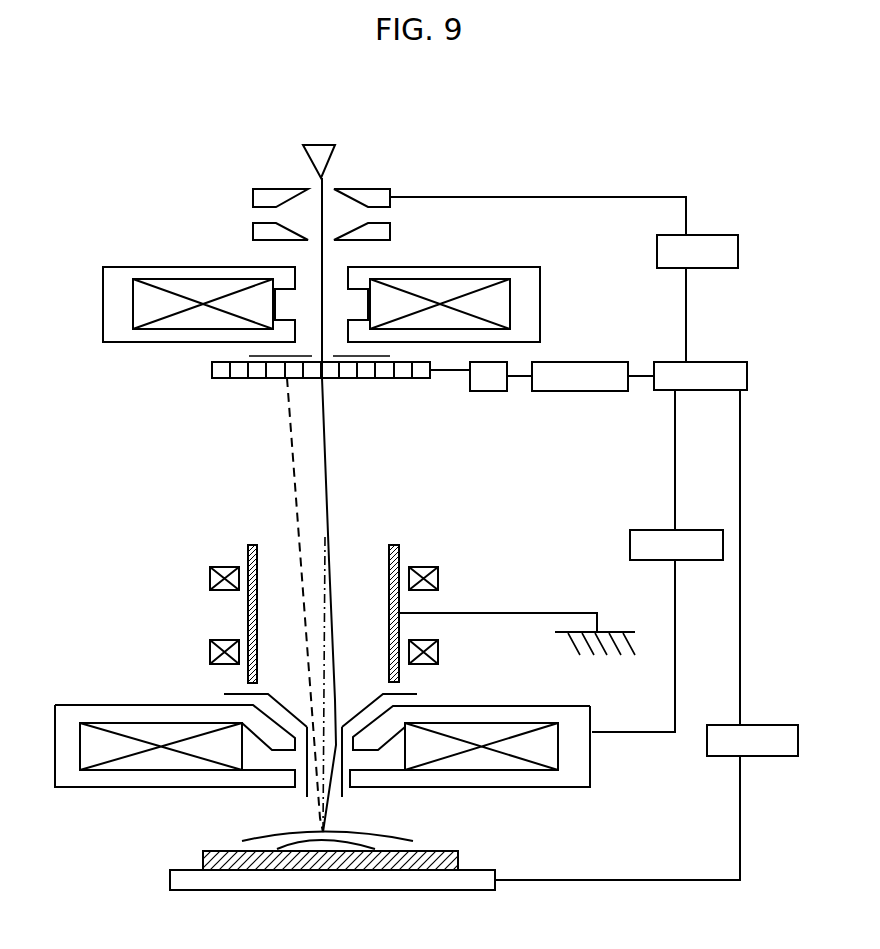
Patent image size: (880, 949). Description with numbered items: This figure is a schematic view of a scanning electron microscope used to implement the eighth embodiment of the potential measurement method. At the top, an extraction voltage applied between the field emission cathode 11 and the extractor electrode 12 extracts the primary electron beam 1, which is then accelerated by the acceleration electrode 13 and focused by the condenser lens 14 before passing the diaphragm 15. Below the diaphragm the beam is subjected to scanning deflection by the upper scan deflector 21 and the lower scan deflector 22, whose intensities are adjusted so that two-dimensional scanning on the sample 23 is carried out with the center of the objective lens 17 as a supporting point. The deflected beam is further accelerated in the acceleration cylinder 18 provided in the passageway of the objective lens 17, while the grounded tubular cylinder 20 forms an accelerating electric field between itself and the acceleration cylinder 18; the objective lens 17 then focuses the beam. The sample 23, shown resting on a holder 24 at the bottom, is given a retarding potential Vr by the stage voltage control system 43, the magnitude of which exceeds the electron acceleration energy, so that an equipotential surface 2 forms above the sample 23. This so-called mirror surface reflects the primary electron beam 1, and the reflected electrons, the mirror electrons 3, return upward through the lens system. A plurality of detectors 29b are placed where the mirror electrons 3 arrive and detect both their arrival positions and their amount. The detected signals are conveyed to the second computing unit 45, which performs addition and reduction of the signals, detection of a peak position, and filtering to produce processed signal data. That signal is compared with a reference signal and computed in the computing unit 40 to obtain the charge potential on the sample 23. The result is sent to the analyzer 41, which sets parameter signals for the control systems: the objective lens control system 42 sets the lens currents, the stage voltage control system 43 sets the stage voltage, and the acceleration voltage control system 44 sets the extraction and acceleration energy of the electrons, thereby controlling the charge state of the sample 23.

The primary electron beam 1 is at (328, 440).
The equipotential surface 2 is at (280, 834).
The mirror electrons 3 is at (293, 485).
The field emission cathode 11 is at (312, 145).
The extractor electrode 12 is at (253, 189).
The acceleration electrode 13 is at (253, 228).
The condenser lens 14 is at (103, 308).
The diaphragm 15 is at (390, 356).
The objective lens 17 is at (60, 705).
The acceleration cylinder 18 is at (417, 694).
The tubular cylinder 20 is at (248, 607).
The upper scan deflector 21 is at (210, 580).
The lower scan deflector 22 is at (210, 656).
The sample 23 is at (203, 855).
The sample stage 24 is at (170, 878).
The detectors 29b is at (212, 372).
The computing unit 40 is at (548, 391).
The analyzer 41 is at (655, 390).
The objective lens control system 42 is at (630, 535).
The stage voltage control system 43 is at (707, 757).
The acceleration voltage control system 44 is at (657, 258).
The second computing unit 45 is at (490, 391).